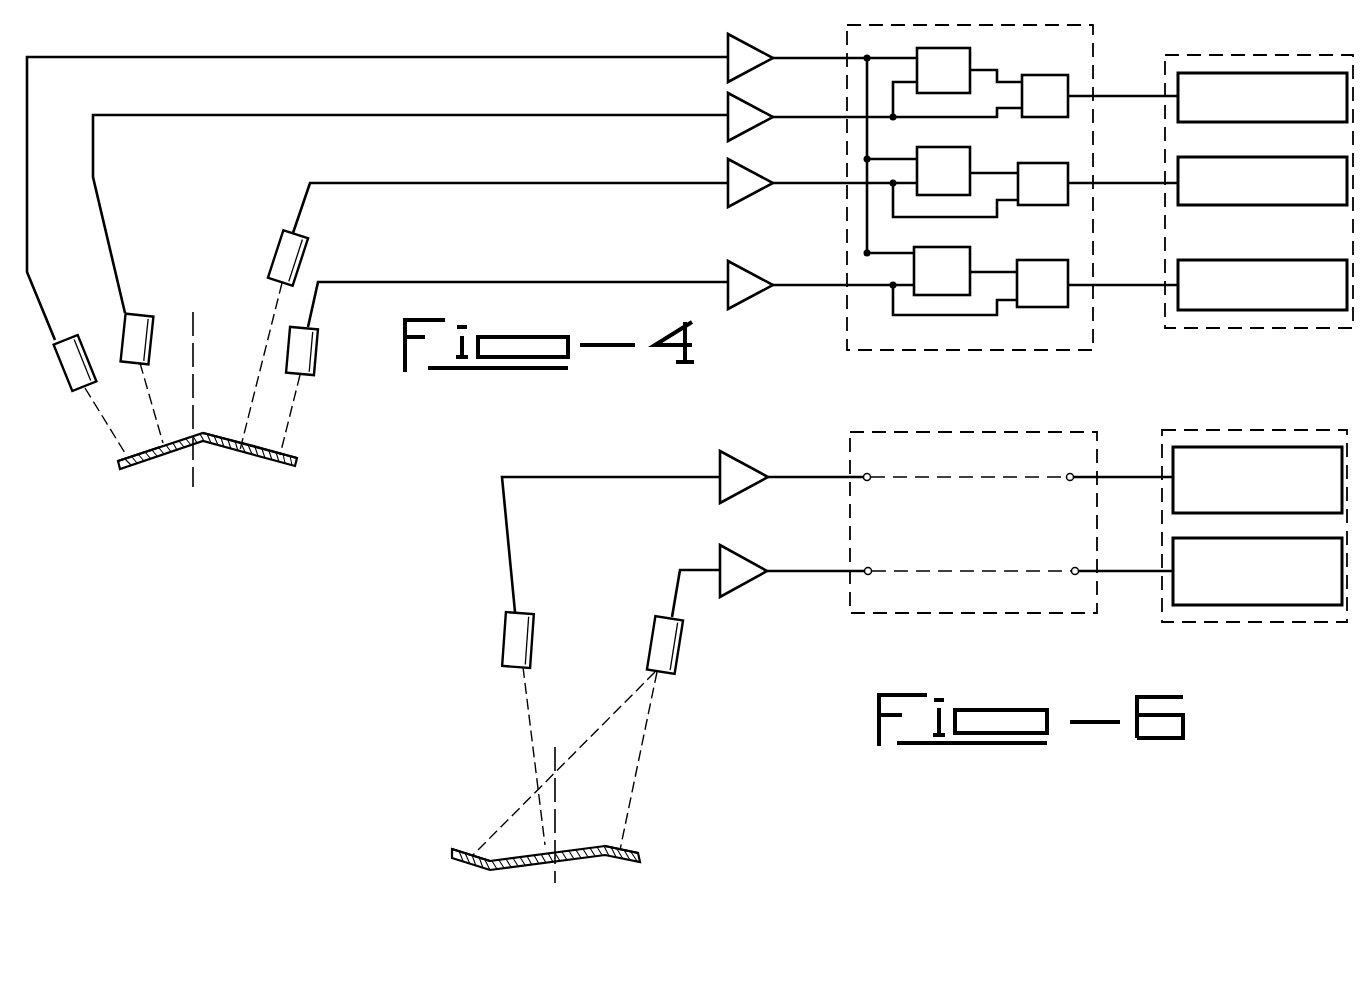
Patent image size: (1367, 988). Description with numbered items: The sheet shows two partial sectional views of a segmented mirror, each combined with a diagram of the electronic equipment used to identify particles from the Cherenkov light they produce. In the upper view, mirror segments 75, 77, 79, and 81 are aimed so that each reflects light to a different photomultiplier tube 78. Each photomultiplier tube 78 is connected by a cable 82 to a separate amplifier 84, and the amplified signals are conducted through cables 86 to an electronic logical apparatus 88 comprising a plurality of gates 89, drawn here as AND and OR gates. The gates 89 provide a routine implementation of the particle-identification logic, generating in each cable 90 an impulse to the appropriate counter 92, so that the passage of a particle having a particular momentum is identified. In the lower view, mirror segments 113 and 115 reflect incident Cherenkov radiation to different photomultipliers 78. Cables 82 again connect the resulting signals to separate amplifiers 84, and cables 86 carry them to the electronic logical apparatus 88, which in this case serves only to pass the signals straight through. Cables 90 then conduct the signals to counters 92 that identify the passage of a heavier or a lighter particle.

In FIG. 4, the mirror segment 75 is at (173, 457).
In FIG. 4, the mirror segment 77 is at (218, 455).
In FIG. 4, the photomultiplier tube 78 is at (122, 322).
In FIG. 6, the photomultiplier tube 78 is at (510, 650).
In FIG. 4, the mirror segment 79 is at (285, 465).
In FIG. 4, the mirror segment 81 is at (122, 466).
In FIG. 4, the cable 82 is at (533, 60).
In FIG. 6, the cable 82 is at (512, 527).
In FIG. 4, the amplifier 84 is at (740, 70).
In FIG. 6, the amplifier 84 is at (745, 567).
In FIG. 4, the cable 86 is at (830, 58).
In FIG. 6, the cable 86 is at (828, 476).
In FIG. 4, the electronic logical apparatus 88 is at (1045, 350).
In FIG. 6, the electronic logical apparatus 88 is at (1007, 613).
In FIG. 4, the gate 89 is at (1030, 78).
In FIG. 4, the cable 90 is at (1150, 93).
In FIG. 6, the cable 90 is at (1153, 478).
In FIG. 4, the counter 92 is at (1318, 328).
In FIG. 6, the counter 92 is at (1278, 622).
In FIG. 6, the mirror segment 113 is at (535, 867).
In FIG. 6, the mirror segment 115 is at (468, 863).